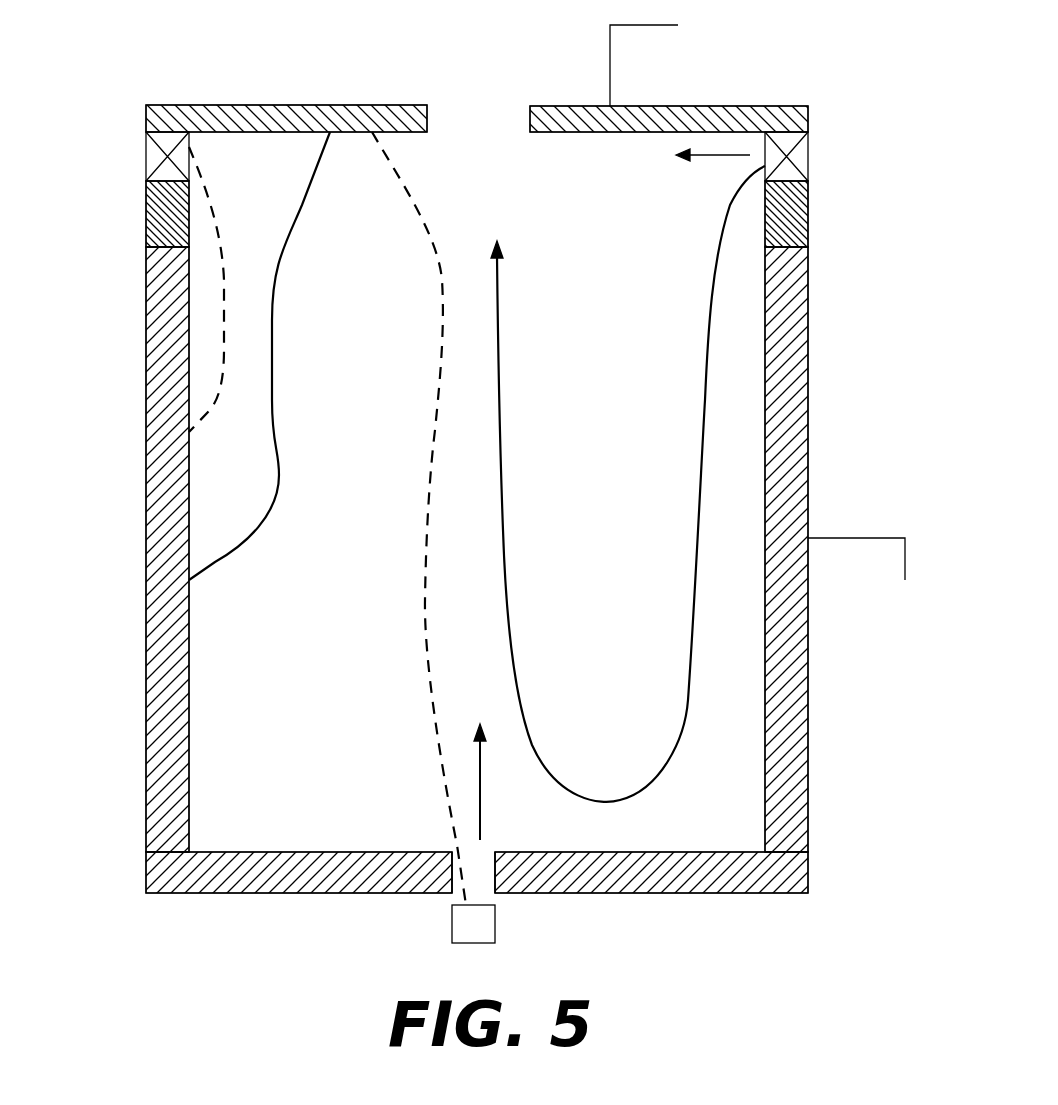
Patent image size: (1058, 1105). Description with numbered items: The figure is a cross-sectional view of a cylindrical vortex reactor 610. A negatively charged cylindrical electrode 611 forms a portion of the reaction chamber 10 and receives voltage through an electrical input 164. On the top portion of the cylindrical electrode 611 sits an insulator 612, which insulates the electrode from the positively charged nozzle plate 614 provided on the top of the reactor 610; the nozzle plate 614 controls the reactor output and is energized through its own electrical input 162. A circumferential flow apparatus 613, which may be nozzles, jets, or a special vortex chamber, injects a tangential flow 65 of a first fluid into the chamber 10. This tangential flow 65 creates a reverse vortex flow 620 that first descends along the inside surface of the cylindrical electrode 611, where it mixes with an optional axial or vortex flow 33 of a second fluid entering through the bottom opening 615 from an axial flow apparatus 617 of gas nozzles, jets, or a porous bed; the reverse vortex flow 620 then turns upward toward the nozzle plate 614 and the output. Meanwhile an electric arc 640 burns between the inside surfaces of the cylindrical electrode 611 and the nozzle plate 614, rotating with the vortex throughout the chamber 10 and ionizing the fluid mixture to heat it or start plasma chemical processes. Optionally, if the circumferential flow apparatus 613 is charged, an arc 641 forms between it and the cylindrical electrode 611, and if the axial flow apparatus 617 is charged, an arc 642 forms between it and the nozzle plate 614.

The chamber 10 is at (582, 256).
The axial or vortex flow 33 is at (498, 782).
The tangential flow 65 is at (713, 170).
The electrical input 162 is at (671, 59).
The electrical input 164 is at (864, 582).
The reactor 610 is at (476, 498).
The cylindrical electrode 611 is at (808, 424).
The insulator 612 is at (146, 207).
The circumferential flow apparatus 613 is at (146, 153).
The nozzle plate 614 is at (752, 88).
The bottom opening 615 is at (487, 894).
The axial flow apparatus 617 is at (452, 926).
The reverse vortex flow 620 is at (628, 484).
The electric arc 640 is at (272, 350).
The arc 641 is at (239, 268).
The arc 642 is at (410, 508).